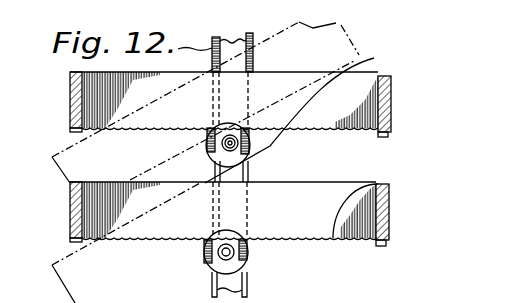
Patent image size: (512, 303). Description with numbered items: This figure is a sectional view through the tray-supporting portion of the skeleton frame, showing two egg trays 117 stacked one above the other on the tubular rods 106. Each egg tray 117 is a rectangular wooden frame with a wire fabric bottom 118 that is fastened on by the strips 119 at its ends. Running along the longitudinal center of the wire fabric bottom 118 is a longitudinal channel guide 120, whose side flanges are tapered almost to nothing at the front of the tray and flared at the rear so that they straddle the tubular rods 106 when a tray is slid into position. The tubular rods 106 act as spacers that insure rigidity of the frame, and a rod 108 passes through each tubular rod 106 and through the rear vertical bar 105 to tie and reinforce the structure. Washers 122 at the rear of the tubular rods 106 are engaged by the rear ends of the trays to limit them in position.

The vertical bar 105 is at (227, 126).
The tubular rod 106 is at (243, 175).
The rod 108 is at (206, 149).
The egg tray 117 is at (390, 97).
The wire fabric bottom 118 is at (378, 184).
The strip 119 is at (70, 128).
The longitudinal channel guide 120 is at (248, 145).
The washer 122 is at (215, 162).